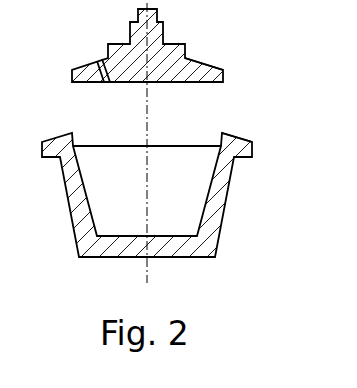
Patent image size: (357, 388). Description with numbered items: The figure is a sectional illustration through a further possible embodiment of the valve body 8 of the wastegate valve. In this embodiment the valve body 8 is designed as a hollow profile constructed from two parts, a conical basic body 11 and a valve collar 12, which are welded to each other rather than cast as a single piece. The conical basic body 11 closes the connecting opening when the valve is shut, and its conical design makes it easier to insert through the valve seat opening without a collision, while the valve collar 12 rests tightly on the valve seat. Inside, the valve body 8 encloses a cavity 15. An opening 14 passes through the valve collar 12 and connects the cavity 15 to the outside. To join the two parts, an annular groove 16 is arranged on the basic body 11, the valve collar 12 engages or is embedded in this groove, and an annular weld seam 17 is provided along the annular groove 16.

The valve body 8 is at (178, 150).
The basic body 11 is at (213, 205).
The valve collar 12 is at (193, 75).
The opening 14 is at (100, 62).
The cavity 15 is at (189, 201).
The annular groove 16 is at (73, 145).
The weld seam 17 is at (228, 131).